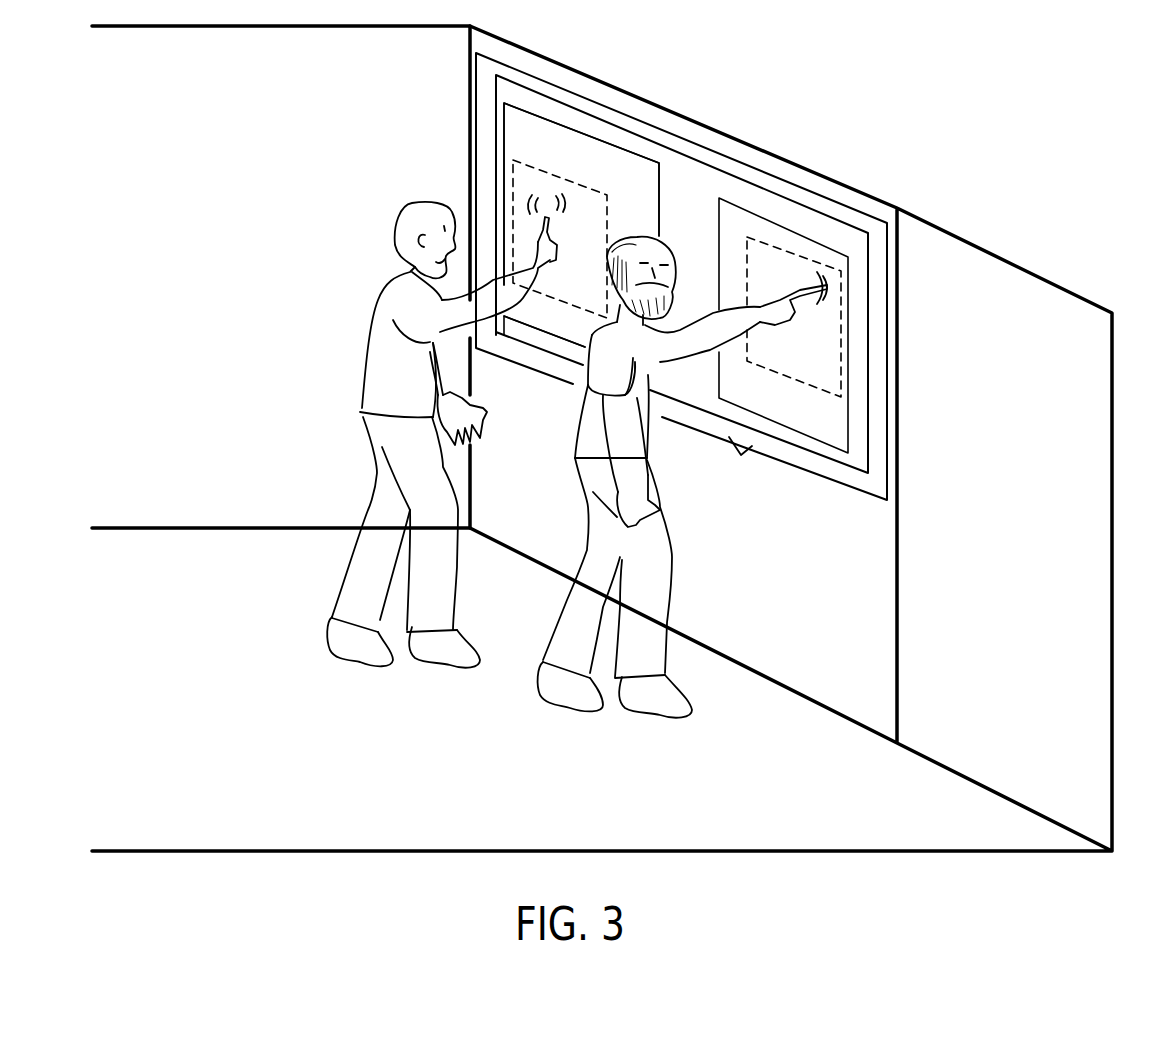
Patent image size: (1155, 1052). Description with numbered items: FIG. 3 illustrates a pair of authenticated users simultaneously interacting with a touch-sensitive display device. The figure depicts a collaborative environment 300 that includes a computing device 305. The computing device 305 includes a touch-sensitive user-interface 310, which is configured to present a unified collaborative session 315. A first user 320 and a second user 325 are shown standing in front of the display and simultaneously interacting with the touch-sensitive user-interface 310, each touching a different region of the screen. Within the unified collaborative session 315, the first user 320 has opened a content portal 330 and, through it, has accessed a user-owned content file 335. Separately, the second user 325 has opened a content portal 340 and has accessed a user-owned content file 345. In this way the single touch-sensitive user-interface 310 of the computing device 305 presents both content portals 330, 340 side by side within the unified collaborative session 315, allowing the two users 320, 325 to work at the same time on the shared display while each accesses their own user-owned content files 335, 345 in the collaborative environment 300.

The collaborative environment 300 is at (712, 82).
The computing device 305 is at (756, 464).
The touch-sensitive user-interface 310 is at (797, 186).
The unified collaborative session 315 is at (705, 207).
The first user 320 is at (364, 393).
The second user 325 is at (577, 413).
The content portal 330 is at (648, 190).
The user-owned content file 335 is at (600, 301).
The content portal 340 is at (840, 430).
The user-owned content file 345 is at (833, 377).